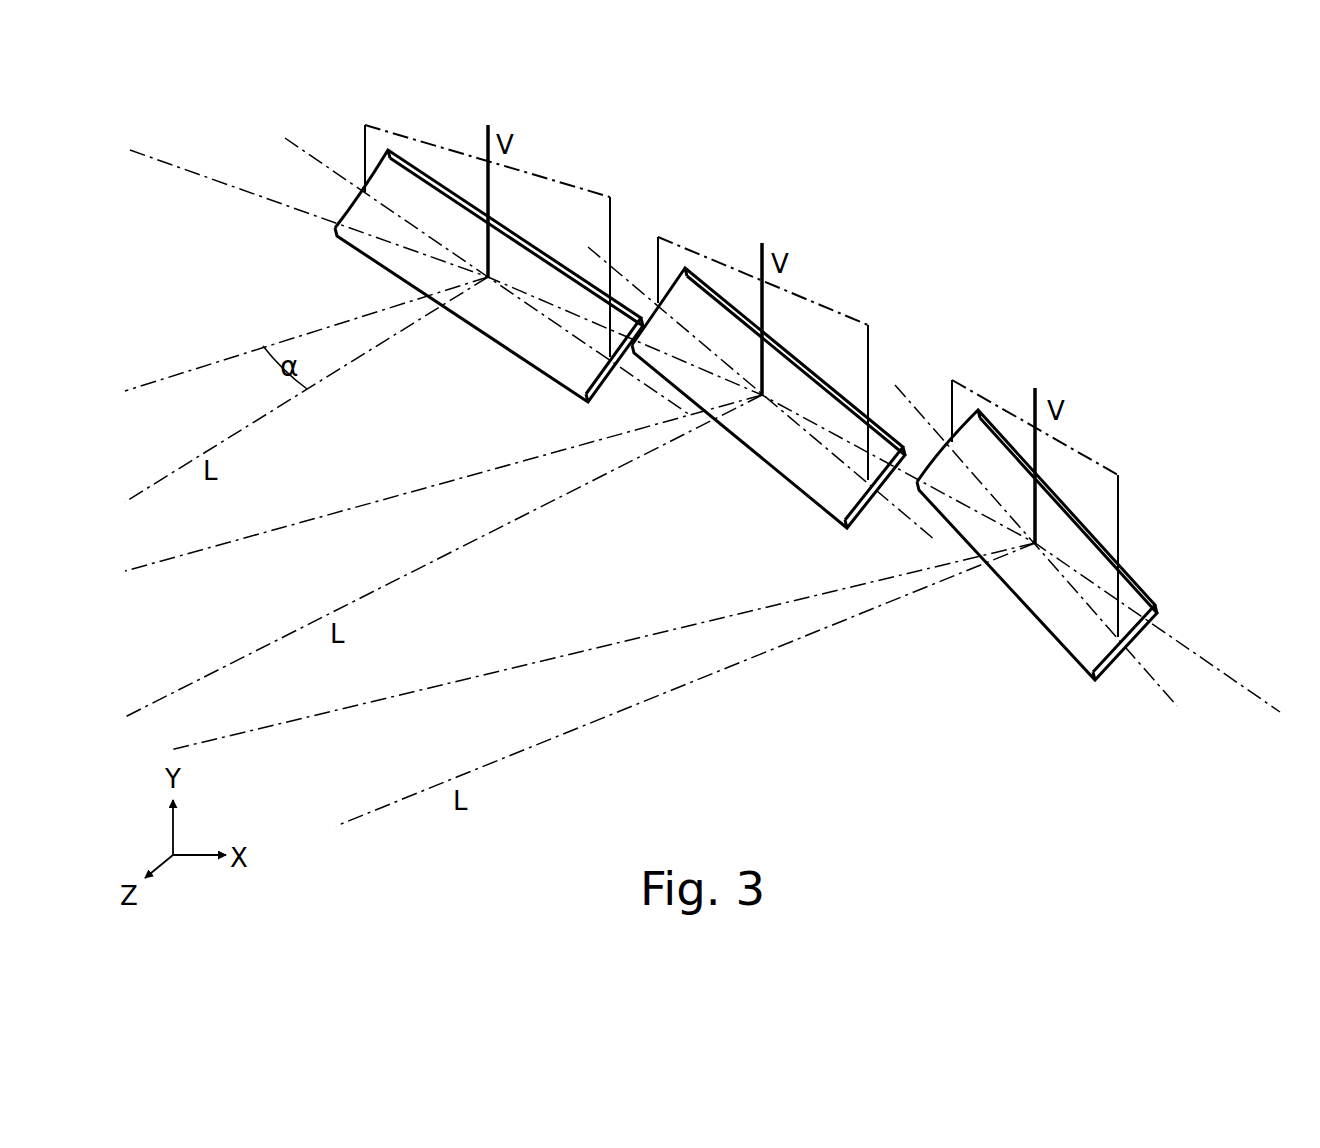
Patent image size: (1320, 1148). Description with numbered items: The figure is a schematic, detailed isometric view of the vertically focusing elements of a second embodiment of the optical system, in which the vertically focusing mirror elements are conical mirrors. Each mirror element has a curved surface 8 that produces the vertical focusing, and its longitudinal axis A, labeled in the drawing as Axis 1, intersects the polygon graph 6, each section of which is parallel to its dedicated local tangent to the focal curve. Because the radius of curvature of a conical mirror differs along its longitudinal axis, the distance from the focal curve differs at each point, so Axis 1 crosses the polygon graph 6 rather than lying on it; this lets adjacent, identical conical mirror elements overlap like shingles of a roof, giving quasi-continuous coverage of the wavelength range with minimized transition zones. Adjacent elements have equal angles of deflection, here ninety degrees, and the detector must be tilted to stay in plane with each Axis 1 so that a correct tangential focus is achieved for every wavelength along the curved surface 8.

The mirror rotation axis (Axis 1) 1 is at (360, 181).
The polygon graph 6 is at (705, 431).
The curved surface 8 is at (788, 437).